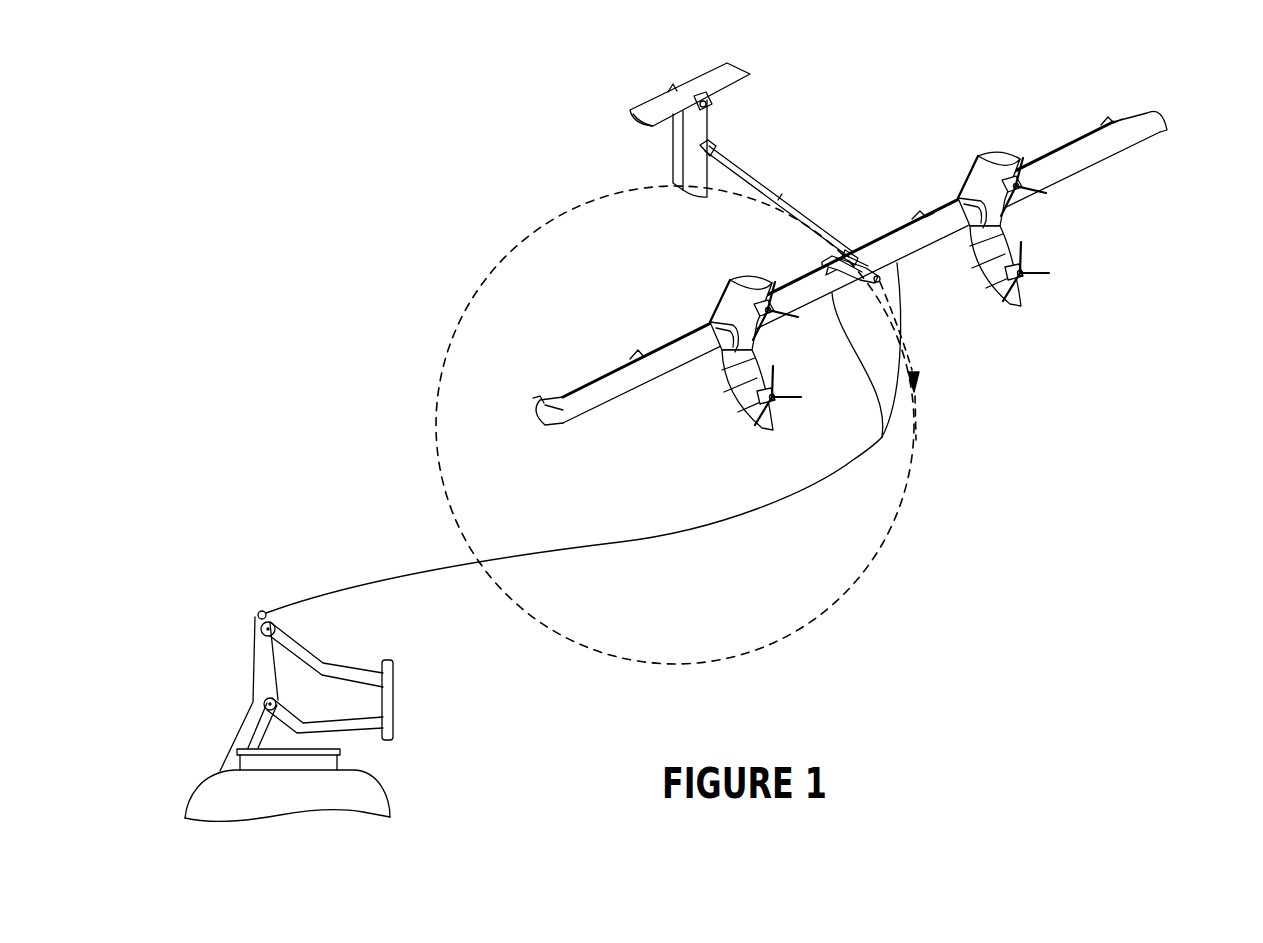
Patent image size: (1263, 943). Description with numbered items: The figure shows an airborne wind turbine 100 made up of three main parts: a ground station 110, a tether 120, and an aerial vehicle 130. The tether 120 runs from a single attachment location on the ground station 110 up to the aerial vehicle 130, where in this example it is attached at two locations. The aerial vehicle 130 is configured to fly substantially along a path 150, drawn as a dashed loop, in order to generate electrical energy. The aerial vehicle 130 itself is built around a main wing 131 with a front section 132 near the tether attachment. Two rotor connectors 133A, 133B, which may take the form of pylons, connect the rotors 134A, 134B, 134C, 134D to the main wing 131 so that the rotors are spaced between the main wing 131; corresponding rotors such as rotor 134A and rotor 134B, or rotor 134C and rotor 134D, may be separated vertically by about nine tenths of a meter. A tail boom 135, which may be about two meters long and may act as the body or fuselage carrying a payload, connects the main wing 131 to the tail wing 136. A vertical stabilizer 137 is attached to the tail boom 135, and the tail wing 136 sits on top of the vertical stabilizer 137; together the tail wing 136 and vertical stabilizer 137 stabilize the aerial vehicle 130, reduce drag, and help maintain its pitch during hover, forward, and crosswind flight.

The airborne wind turbine 100 is at (262, 245).
The ground station 110 is at (262, 665).
The tether 120 is at (378, 566).
The aerial vehicle 130 is at (1247, 97).
The main wing 131 is at (915, 250).
The front section 132 is at (879, 287).
The rotor connector 133A is at (975, 166).
The rotor connector 133B is at (728, 290).
The rotor 134A is at (1023, 202).
The rotor 134B is at (1024, 292).
The rotor 134C is at (776, 326).
The rotor 134D is at (775, 417).
The tail boom 135 is at (768, 191).
The tail wing 136 is at (748, 67).
The vertical stabilizer 137 is at (697, 198).
The path 150 is at (490, 263).